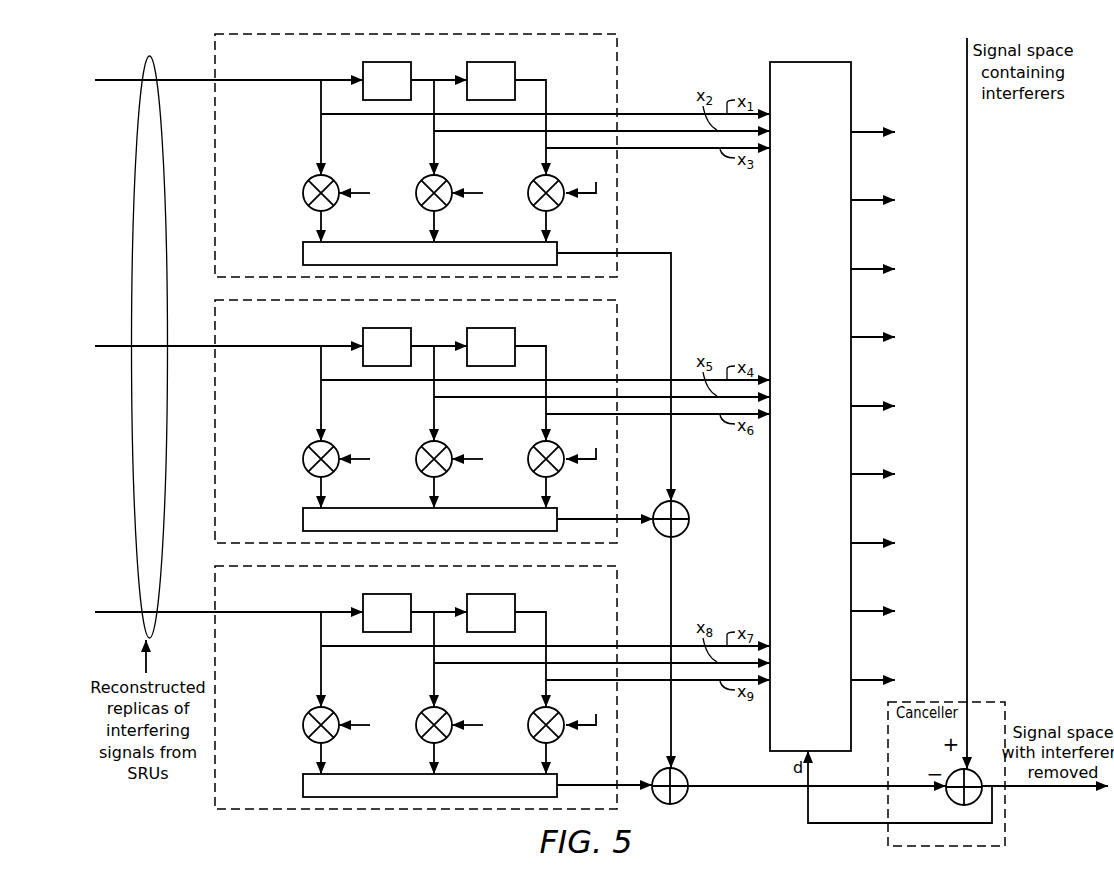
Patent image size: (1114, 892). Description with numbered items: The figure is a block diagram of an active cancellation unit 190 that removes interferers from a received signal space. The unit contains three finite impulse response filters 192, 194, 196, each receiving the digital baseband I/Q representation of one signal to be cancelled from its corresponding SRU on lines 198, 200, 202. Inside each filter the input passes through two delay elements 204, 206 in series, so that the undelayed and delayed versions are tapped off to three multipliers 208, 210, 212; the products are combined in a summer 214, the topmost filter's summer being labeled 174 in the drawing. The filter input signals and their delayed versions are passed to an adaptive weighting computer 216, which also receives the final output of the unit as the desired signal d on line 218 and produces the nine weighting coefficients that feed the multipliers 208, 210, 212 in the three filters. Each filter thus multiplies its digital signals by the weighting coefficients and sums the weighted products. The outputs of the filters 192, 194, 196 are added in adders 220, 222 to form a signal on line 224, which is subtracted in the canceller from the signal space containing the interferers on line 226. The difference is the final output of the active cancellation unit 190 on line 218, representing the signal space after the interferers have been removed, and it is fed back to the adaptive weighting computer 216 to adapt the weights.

The summer 174 is at (303, 252).
The active cancellation unit 190 is at (692, 247).
The finite impulse response filter 192 is at (620, 75).
The finite impulse response filter 194 is at (434, 421).
The finite impulse response filter 196 is at (434, 687).
The line 198 is at (183, 80).
The line 200 is at (229, 372).
The line 202 is at (229, 588).
The delay element 204 is at (395, 62).
The delay element 206 is at (497, 62).
The multiplier 208 is at (337, 178).
The multiplier 210 is at (450, 178).
The multiplier 212 is at (560, 206).
The summer 214 is at (413, 638).
The adaptive weighting computer 216 is at (853, 310).
The line 218 is at (865, 826).
The adder 220 is at (689, 506).
The adder 222 is at (684, 773).
The line 224 is at (705, 788).
The line 226 is at (968, 232).